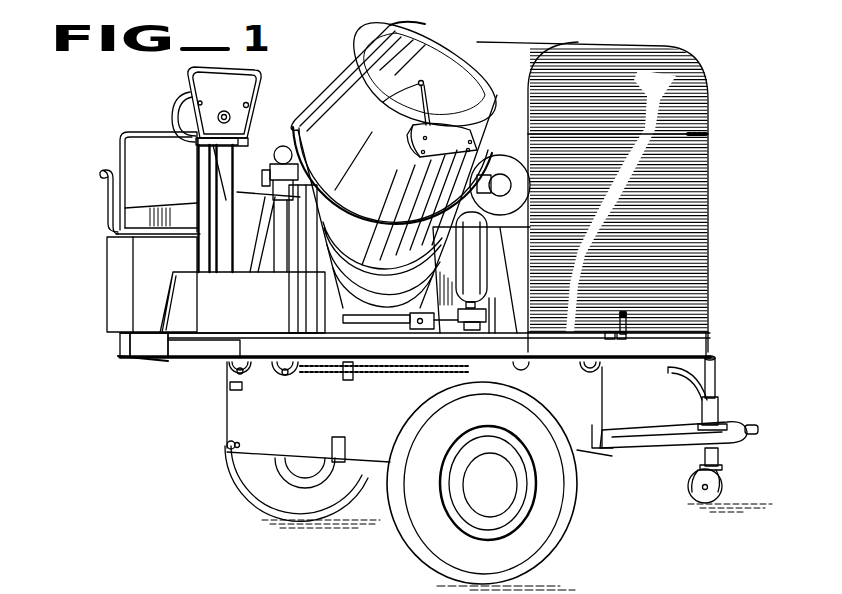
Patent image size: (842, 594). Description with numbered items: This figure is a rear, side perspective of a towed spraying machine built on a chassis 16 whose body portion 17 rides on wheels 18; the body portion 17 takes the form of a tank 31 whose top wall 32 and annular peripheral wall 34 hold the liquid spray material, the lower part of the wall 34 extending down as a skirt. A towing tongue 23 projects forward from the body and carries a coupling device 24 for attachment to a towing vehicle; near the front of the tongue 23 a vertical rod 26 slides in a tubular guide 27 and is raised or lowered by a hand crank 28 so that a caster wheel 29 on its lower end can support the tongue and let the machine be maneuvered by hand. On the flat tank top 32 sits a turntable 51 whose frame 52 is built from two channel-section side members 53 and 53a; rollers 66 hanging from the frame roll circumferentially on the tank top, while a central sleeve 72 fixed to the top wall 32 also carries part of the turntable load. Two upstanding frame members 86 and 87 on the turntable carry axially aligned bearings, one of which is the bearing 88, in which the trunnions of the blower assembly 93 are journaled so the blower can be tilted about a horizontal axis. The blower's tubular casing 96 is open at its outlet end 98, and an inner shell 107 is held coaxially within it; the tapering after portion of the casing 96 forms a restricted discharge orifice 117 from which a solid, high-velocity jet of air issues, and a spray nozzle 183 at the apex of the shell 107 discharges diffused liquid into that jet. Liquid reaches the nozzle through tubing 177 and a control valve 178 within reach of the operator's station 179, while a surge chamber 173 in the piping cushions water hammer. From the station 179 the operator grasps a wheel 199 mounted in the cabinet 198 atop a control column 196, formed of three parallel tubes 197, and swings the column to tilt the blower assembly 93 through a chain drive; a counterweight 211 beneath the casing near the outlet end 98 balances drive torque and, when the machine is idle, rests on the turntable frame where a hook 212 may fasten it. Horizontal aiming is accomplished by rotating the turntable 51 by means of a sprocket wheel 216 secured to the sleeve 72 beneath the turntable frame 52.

The chassis 16 is at (218, 414).
The body portion 17 is at (243, 432).
The wheels 18 is at (410, 535).
The towing tongue 23 is at (668, 445).
The coupling device 24 is at (753, 427).
The vertical rod 26 is at (716, 363).
The tubular guide 27 is at (702, 412).
The hand crank 28 is at (685, 383).
The caster wheel 29 is at (700, 500).
The tank 31 is at (272, 431).
The top wall 32 is at (348, 381).
The annular peripheral wall 34 is at (227, 400).
The turntable 51 is at (133, 363).
The turntable frame 52 is at (116, 344).
The side member 53 is at (115, 337).
The side member 53a is at (192, 345).
The rollers 66 is at (282, 377).
The sleeve 72 is at (398, 375).
The upstanding frame member 86 is at (308, 232).
The upstanding frame member 87 is at (492, 233).
The bearing 88 is at (274, 160).
The blower assembly 93 is at (388, 155).
The casing 96 is at (377, 250).
The outlet end 98 is at (440, 45).
The inner casing or shell 107 is at (410, 108).
The discharge orifice 117 is at (390, 27).
The surge chamber 173 is at (467, 272).
The tubing 177 is at (360, 312).
The control valve 178 is at (280, 265).
The operator's station 179 is at (112, 204).
The spray nozzle 183 is at (445, 77).
The control column 196 is at (186, 80).
The parallel tubes 197 is at (227, 195).
The cabinet 198 is at (203, 91).
The wheel 199 is at (178, 114).
The counterweight 211 is at (412, 140).
The hook 212 is at (421, 331).
The sprocket wheel 216 is at (462, 338).